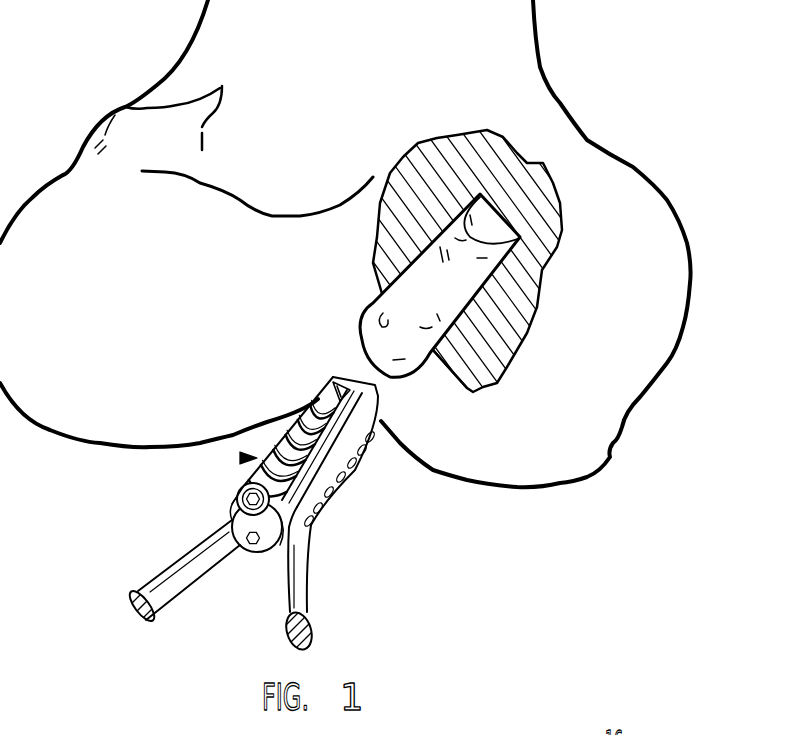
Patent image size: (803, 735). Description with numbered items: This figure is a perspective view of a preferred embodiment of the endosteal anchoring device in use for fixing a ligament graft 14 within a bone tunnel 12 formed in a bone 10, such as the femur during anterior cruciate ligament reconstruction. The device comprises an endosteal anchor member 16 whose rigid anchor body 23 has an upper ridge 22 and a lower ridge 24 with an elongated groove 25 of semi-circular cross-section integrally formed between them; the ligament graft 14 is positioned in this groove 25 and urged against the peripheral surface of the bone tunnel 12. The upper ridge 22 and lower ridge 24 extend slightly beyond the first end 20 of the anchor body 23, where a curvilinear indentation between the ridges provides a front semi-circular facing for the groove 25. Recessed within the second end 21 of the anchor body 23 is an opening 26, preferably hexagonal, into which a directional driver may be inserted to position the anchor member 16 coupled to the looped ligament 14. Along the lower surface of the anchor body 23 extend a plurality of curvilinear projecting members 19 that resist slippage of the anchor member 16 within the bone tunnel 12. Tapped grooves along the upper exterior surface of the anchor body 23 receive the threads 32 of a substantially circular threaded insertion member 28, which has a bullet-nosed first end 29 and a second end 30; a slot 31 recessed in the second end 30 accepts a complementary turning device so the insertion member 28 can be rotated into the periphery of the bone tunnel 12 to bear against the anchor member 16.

The bone 10 is at (605, 167).
The bone tunnel 12 is at (362, 322).
The ligament graft 14 is at (160, 585).
The endosteal anchor member 16 is at (265, 490).
The projecting members 19 is at (328, 500).
The first end 20 is at (383, 393).
The second end 21 is at (267, 553).
The upper ridge 22 is at (348, 376).
The anchor body 23 is at (233, 500).
The lower ridge 24 is at (388, 405).
The groove 25 is at (230, 518).
The opening 26 is at (243, 557).
The threaded insertion member 28 is at (243, 458).
The first end 29 is at (333, 388).
The second end 30 is at (243, 493).
The slot 31 is at (247, 500).
The threads 32 is at (288, 437).